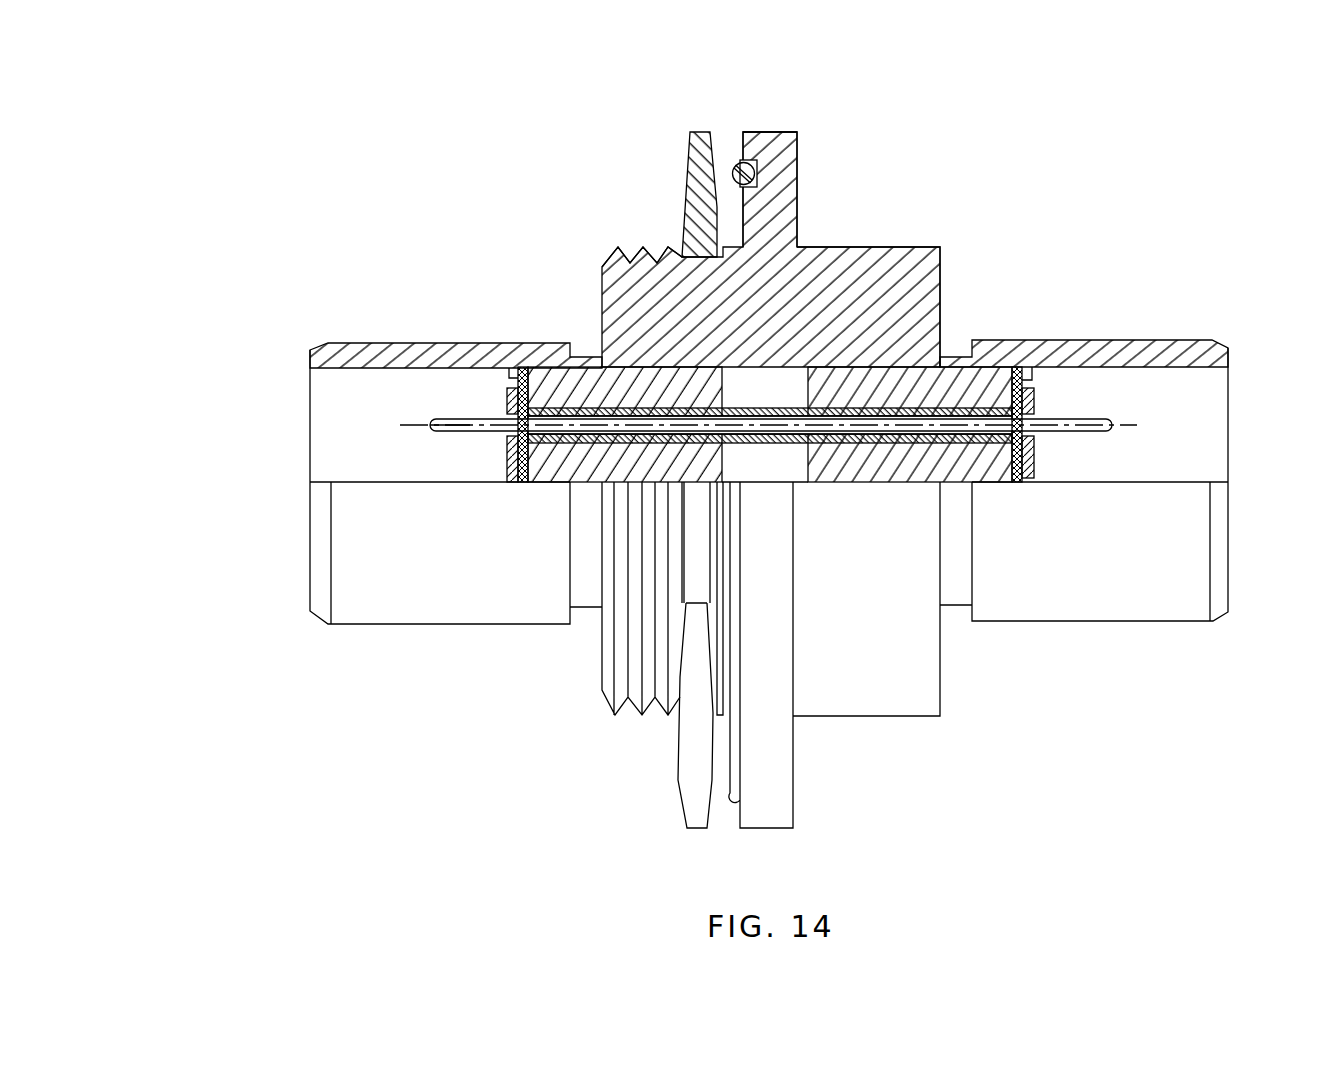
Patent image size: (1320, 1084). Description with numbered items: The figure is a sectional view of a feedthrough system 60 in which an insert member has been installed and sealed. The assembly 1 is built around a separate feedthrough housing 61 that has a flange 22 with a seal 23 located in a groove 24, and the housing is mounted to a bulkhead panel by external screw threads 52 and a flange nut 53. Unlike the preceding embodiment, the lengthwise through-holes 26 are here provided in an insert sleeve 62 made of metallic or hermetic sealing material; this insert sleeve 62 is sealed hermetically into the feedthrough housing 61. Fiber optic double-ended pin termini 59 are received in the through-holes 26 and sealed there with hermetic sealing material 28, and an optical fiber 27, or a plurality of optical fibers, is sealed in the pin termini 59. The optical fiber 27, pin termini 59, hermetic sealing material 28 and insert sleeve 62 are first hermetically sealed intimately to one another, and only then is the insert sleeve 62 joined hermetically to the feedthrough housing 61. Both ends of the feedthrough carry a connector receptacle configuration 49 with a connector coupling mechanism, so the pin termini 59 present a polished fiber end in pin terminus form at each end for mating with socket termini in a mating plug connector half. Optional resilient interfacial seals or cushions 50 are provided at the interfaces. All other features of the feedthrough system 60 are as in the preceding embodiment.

The connector assembly 1 is at (763, 132).
The flange 22 is at (797, 205).
The seal 23 is at (735, 165).
The groove 24 is at (765, 158).
The lengthwise through-holes 26 is at (950, 442).
The optical fiber 27 is at (422, 427).
The hermetic sealing material 28 is at (855, 440).
The connector receptacle configuration 49 is at (348, 338).
The resilient interfacial seals/cushions 50 is at (512, 462).
The external screw threads 52 is at (625, 712).
The flange nut 53 is at (683, 795).
The fiber optic double-ended pin termini 59 is at (452, 418).
The feedthrough system 60 is at (602, 280).
The feedthrough housing 61 is at (943, 252).
The insert sleeve 62 is at (960, 382).